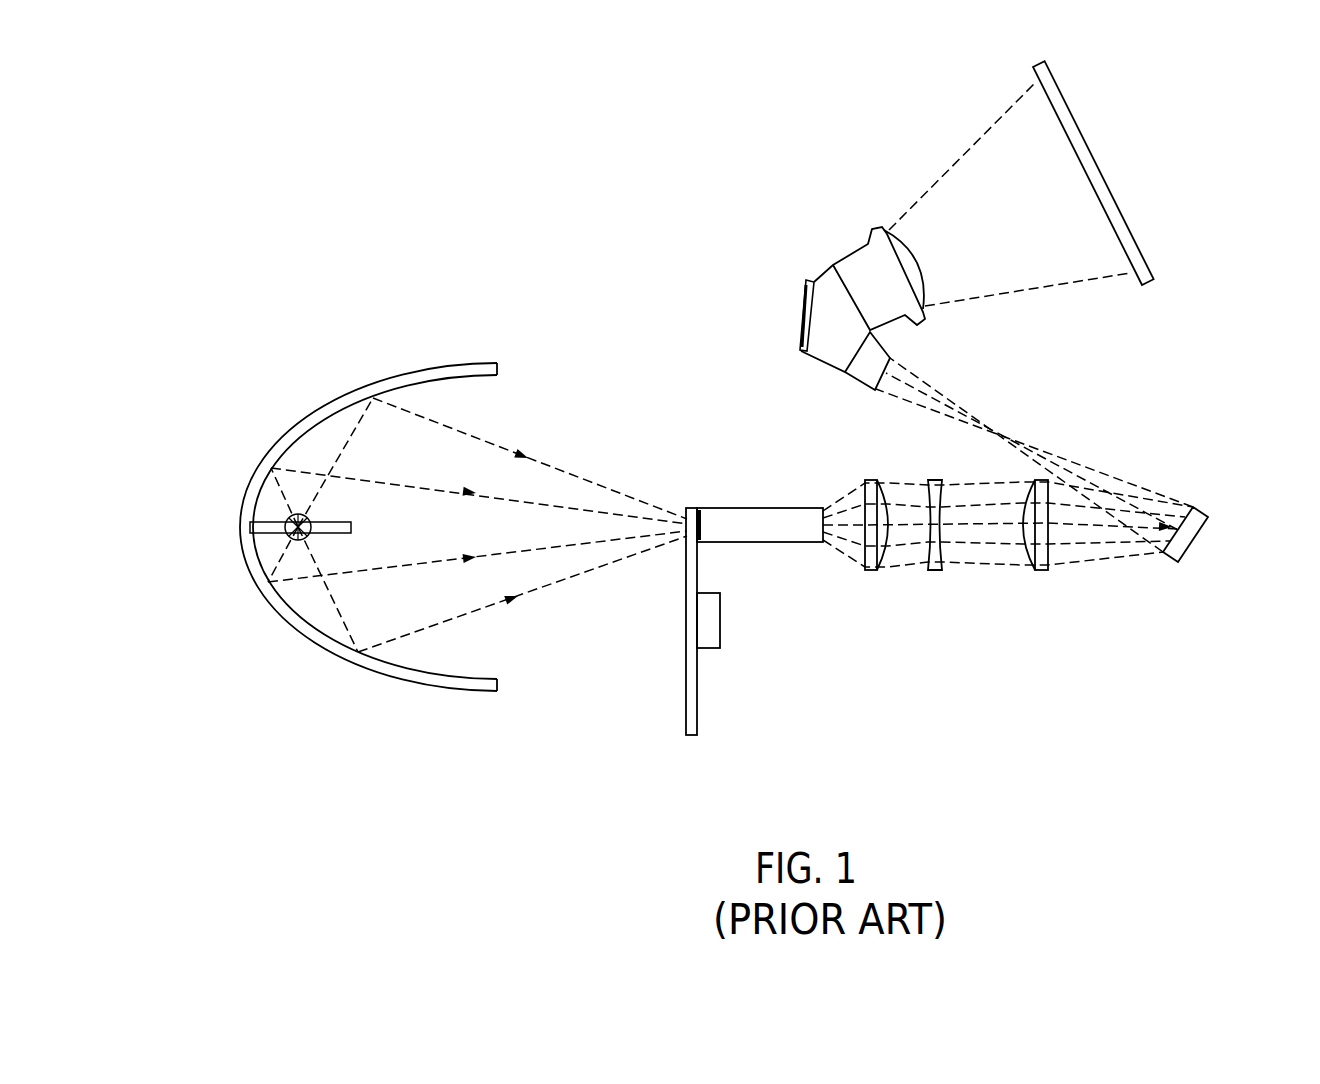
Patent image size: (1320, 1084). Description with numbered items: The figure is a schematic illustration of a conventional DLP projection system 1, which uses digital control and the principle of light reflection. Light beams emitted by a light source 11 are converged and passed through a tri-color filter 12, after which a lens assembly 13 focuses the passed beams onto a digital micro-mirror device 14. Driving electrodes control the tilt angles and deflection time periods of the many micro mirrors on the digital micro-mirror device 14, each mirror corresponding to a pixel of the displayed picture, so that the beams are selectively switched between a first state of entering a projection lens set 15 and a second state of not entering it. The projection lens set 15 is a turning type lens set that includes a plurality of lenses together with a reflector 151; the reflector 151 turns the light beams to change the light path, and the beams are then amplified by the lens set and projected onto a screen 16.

The DLP projection system 1 is at (296, 214).
The light source 11 is at (283, 540).
The tri-color filter 12 is at (689, 717).
The lens assembly 13 is at (698, 572).
The digital micro-mirror device 14 is at (1190, 536).
The projection lens set 15 is at (821, 290).
The reflector 151 is at (803, 313).
The screen 16 is at (1085, 153).